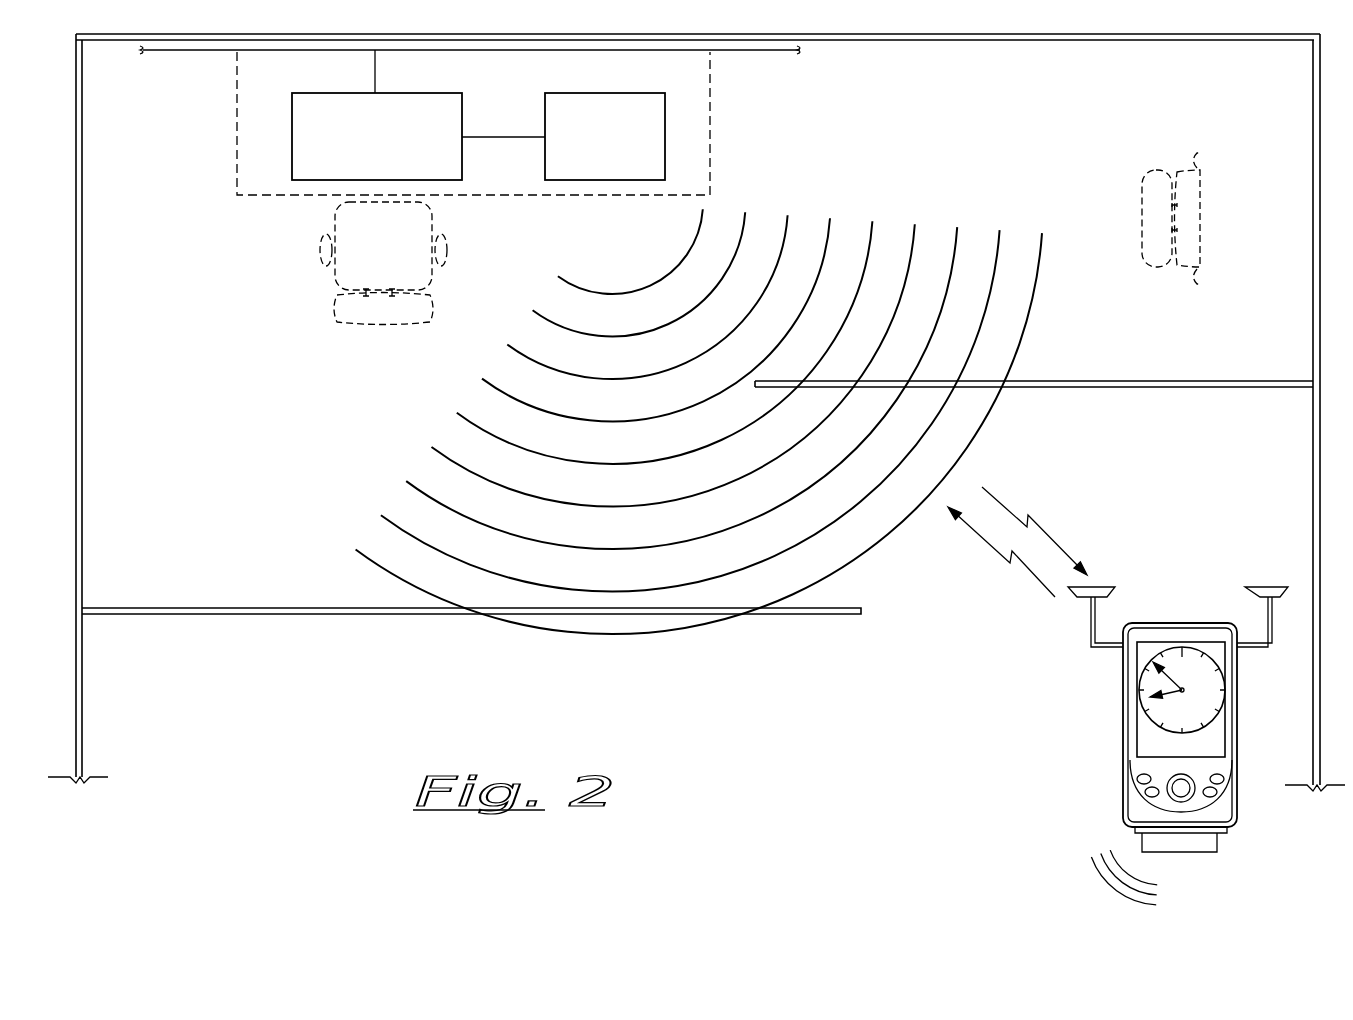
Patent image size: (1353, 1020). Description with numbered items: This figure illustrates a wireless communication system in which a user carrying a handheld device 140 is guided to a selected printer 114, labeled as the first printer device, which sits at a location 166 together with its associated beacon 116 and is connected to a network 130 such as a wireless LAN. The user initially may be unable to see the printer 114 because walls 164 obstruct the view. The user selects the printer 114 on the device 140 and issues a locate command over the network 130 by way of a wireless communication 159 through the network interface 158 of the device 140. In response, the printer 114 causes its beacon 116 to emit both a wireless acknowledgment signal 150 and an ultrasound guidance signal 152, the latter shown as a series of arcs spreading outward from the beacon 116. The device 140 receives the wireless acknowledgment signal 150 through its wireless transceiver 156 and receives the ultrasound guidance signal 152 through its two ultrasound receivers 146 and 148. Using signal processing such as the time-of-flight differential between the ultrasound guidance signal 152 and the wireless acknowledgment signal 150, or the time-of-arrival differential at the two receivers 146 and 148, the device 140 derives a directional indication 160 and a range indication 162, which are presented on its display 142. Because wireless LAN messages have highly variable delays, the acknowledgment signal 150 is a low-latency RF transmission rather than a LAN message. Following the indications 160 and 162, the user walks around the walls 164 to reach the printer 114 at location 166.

The printer 114 is at (294, 138).
The beacon 116 is at (657, 138).
The network 130 is at (767, 53).
The device 140 is at (1130, 798).
The display 142 is at (1140, 741).
The ultrasound receiver 146 is at (1087, 596).
The ultrasound receiver 148 is at (1267, 592).
The wireless acknowledgment signal 150 is at (1047, 530).
The ultrasound guidance signal 152 is at (1041, 250).
The wireless transceiver 156 is at (1128, 622).
The network interface 158 is at (1187, 853).
The wireless communication 159 is at (1087, 870).
The directional indication 160 is at (1140, 706).
The range indication 162 is at (1212, 742).
The walls 164 is at (1080, 388).
The location 166 is at (246, 234).